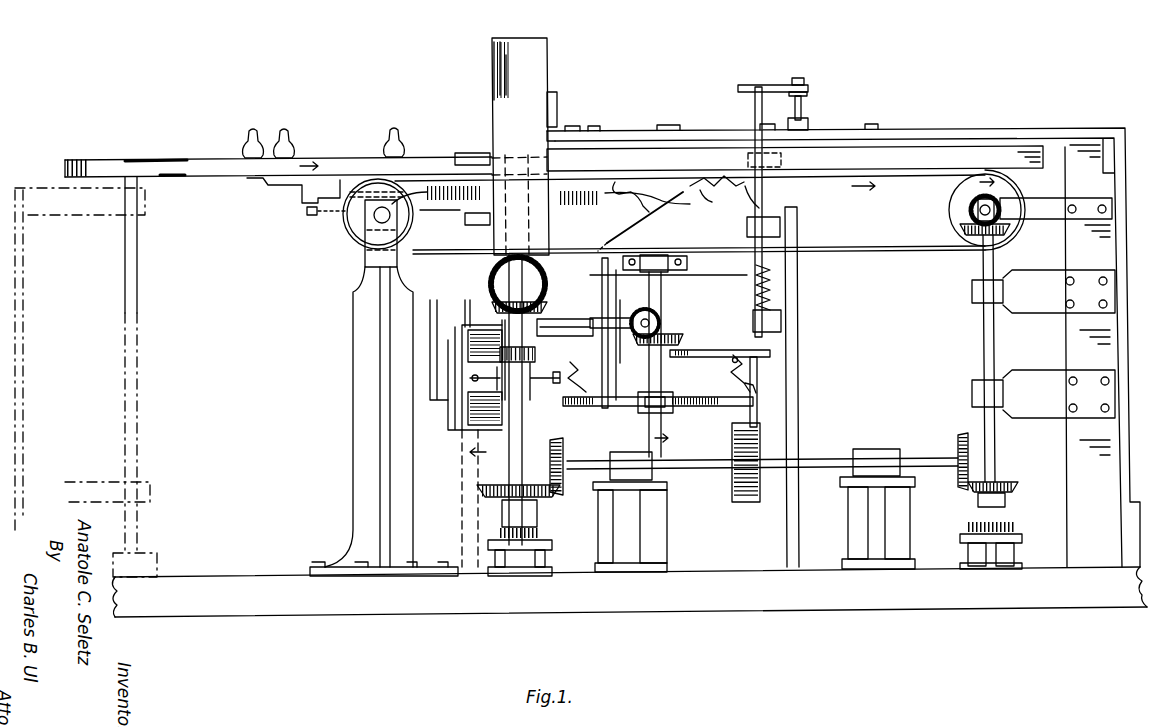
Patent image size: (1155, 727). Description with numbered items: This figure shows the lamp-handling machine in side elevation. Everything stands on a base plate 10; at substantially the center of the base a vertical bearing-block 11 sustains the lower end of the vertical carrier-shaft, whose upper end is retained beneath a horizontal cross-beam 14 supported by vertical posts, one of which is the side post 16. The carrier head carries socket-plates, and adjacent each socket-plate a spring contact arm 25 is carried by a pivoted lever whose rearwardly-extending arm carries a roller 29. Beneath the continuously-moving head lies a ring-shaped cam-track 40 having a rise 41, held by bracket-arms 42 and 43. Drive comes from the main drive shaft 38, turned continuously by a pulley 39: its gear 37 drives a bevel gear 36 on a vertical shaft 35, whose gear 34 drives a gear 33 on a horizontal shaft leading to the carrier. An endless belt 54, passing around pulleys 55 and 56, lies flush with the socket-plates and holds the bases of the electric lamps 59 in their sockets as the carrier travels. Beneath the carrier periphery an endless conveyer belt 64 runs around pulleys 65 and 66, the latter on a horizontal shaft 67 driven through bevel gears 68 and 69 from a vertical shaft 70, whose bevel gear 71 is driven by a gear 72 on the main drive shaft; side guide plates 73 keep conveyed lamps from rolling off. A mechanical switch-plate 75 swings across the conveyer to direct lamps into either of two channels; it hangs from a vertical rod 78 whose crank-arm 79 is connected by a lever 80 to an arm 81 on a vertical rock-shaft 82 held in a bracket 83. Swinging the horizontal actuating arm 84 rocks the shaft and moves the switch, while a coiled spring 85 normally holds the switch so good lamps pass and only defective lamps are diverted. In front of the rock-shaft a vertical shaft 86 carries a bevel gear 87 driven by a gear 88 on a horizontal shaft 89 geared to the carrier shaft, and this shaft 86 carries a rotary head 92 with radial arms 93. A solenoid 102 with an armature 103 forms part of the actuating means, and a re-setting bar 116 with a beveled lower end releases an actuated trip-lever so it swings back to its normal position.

The base plate 10 is at (862, 600).
The vertical bearing-block 11 is at (462, 467).
The horizontal cross-beam 14 is at (552, 45).
The vertical post 16 is at (497, 90).
The spring contact arm 25 is at (283, 190).
The roller 29 is at (306, 212).
The gear 33 is at (545, 283).
The gear 34 is at (546, 305).
The vertical shaft 35 is at (510, 280).
The bevel gear 36 is at (477, 492).
The gear 37 is at (568, 446).
The main drive shaft 38 is at (803, 458).
The pulley 39 is at (745, 502).
The cam-track 40 is at (337, 212).
The rise 41 is at (718, 182).
The bracket-arm 42 is at (448, 376).
The bracket-arm 43 is at (363, 272).
The endless belt 54 is at (210, 160).
The pulley 55 is at (472, 152).
The pulley 56 is at (125, 158).
The electric lamp 59 is at (257, 128).
The endless conveyer belt 64 is at (895, 255).
The pulley 65 is at (350, 228).
The pulley 66 is at (950, 203).
The horizontal shaft 67 is at (976, 214).
The bevel gear 68 is at (998, 199).
The bevel gear 69 is at (1006, 232).
The vertical shaft 70 is at (982, 340).
The bevel gear 71 is at (1005, 482).
The gear 72 is at (958, 438).
The side guide plate 73 is at (610, 158).
The mechanical switch-plate 75 is at (802, 174).
The vertical rod 78 is at (802, 112).
The crank-arm 79 is at (810, 94).
The lever 80 is at (806, 80).
The arm 81 is at (777, 85).
The vertical rock-shaft 82 is at (755, 112).
The bracket 83 is at (798, 285).
The actuating arm 84 is at (710, 352).
The coiled spring 85 is at (778, 292).
The vertical shaft 86 is at (662, 438).
The bevel gear 87 is at (680, 335).
The gear 88 is at (660, 312).
The horizontal shaft 89 is at (636, 316).
The rotary head 92 is at (648, 394).
The radial arm 93 is at (720, 392).
The solenoid 102 is at (448, 334).
The armature 103 is at (450, 394).
The re-setting bar 116 is at (622, 340).